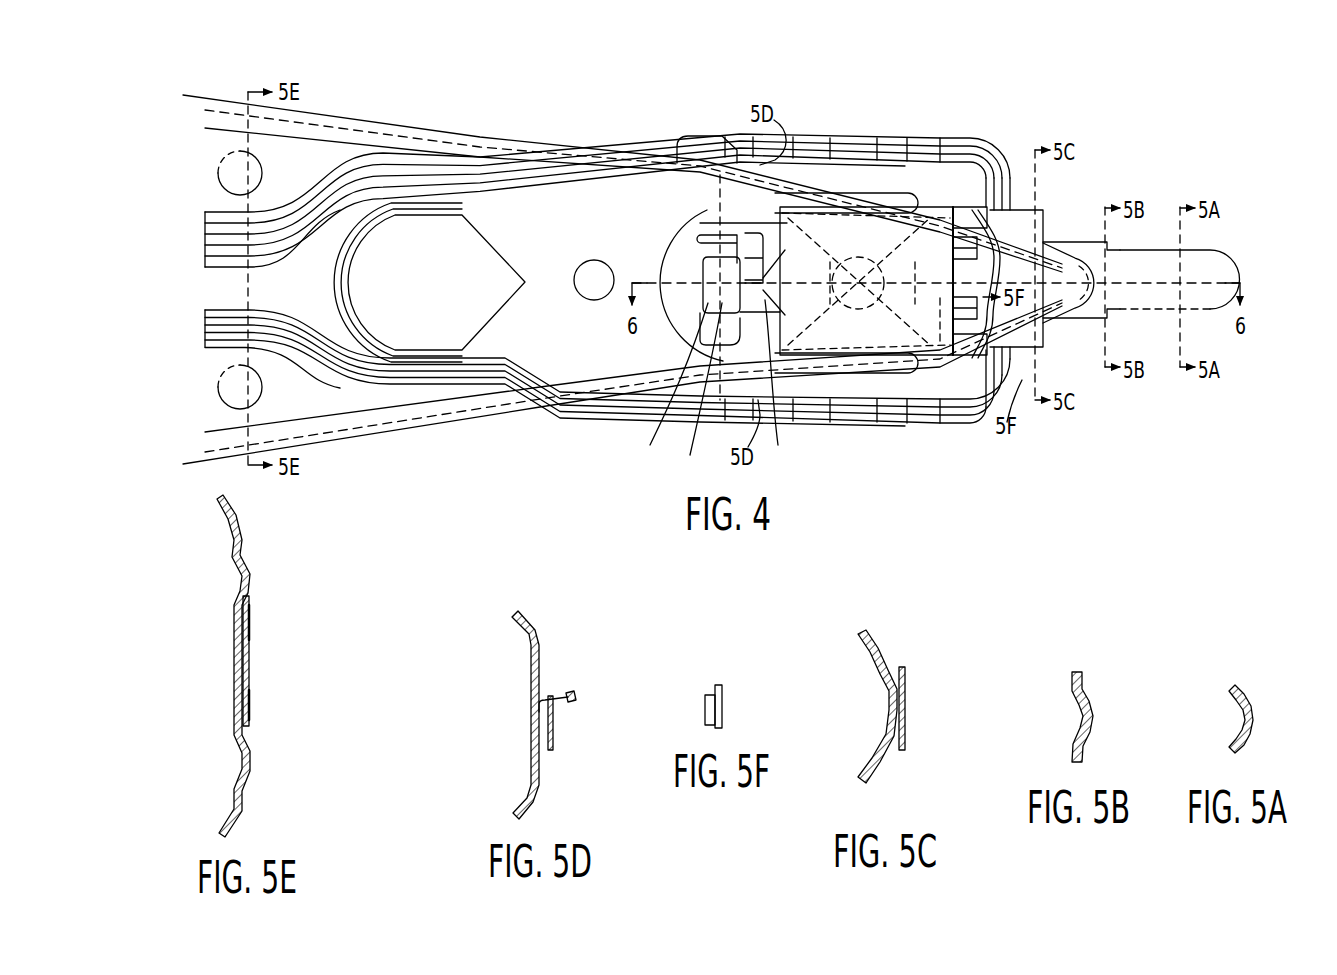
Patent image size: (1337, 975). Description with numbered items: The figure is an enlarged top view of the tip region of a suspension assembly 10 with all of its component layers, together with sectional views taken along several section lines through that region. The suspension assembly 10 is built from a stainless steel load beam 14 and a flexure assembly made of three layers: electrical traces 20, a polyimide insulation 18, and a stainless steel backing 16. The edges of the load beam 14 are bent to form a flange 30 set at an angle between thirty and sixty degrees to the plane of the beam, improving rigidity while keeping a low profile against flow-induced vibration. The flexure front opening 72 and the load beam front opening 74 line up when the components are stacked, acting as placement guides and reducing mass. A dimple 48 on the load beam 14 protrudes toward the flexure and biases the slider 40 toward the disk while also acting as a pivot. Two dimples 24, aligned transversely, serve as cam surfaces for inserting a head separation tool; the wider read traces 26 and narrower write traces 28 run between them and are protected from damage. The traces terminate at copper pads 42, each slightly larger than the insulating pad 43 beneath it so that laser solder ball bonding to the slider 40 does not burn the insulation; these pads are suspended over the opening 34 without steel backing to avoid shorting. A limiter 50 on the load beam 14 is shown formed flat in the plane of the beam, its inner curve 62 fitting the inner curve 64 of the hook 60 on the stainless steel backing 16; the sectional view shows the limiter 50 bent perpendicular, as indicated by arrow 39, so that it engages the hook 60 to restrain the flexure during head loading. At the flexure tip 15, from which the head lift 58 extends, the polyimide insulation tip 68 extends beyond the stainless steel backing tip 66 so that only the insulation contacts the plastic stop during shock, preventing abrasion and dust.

In FIG. 4, the suspension assembly 10 is at (1138, 120).
In FIG. 4, the load beam 14 is at (484, 123).
In FIG. 4, the flexure tip 15 is at (1082, 322).
In FIG. 5E, the stainless steel backing 16 is at (250, 618).
In FIG. 5C, the stainless steel backing 16 is at (924, 683).
In FIG. 4, the polyimide insulation 18 is at (698, 140).
In FIG. 5E, the polyimide insulation 18 is at (285, 670).
In FIG. 5C, the polyimide insulation 18 is at (901, 668).
In FIG. 4, the electrical traces 20 is at (991, 162).
In FIG. 4, the dimples 24 is at (237, 163).
In FIG. 5E, the dimples 24 is at (240, 560).
In FIG. 4, the read traces 26 is at (213, 212).
In FIG. 5E, the read traces 26 is at (285, 670).
In FIG. 4, the write traces 28 is at (212, 346).
In FIG. 5E, the write traces 28 is at (285, 670).
In FIG. 4, the flange 30 is at (312, 118).
In FIG. 5E, the flange 30 is at (233, 497).
In FIG. 5D, the flange 30 is at (523, 619).
In FIG. 5C, the flange 30 is at (866, 633).
In FIG. 4, the opening 34 is at (938, 235).
In FIG. 5D, the arrow 39 is at (565, 690).
In FIG. 4, the slider 40 is at (709, 385).
In FIG. 4, the copper pad 42 is at (995, 214).
In FIG. 5F, the copper pad 42 is at (722, 710).
In FIG. 4, the insulating pad 43 is at (968, 214).
In FIG. 5F, the insulating pad 43 is at (705, 712).
In FIG. 4, the dimple 48 is at (860, 258).
In FIG. 4, the limiter 50 is at (707, 237).
In FIG. 5D, the limiter 50 is at (568, 746).
In FIG. 4, the head lift 58 is at (1170, 303).
In FIG. 5D, the hook 60 is at (571, 709).
In FIG. 4, the inner curve of limiter 62 is at (745, 245).
In FIG. 4, the inner curve of hook 64 is at (708, 391).
In FIG. 4, the stainless steel backing tip 66 is at (1050, 264).
In FIG. 4, the polyimide insulation tip 68 is at (1062, 258).
In FIG. 4, the flexure front opening 72 is at (429, 209).
In FIG. 4, the load beam front opening 74 is at (407, 236).